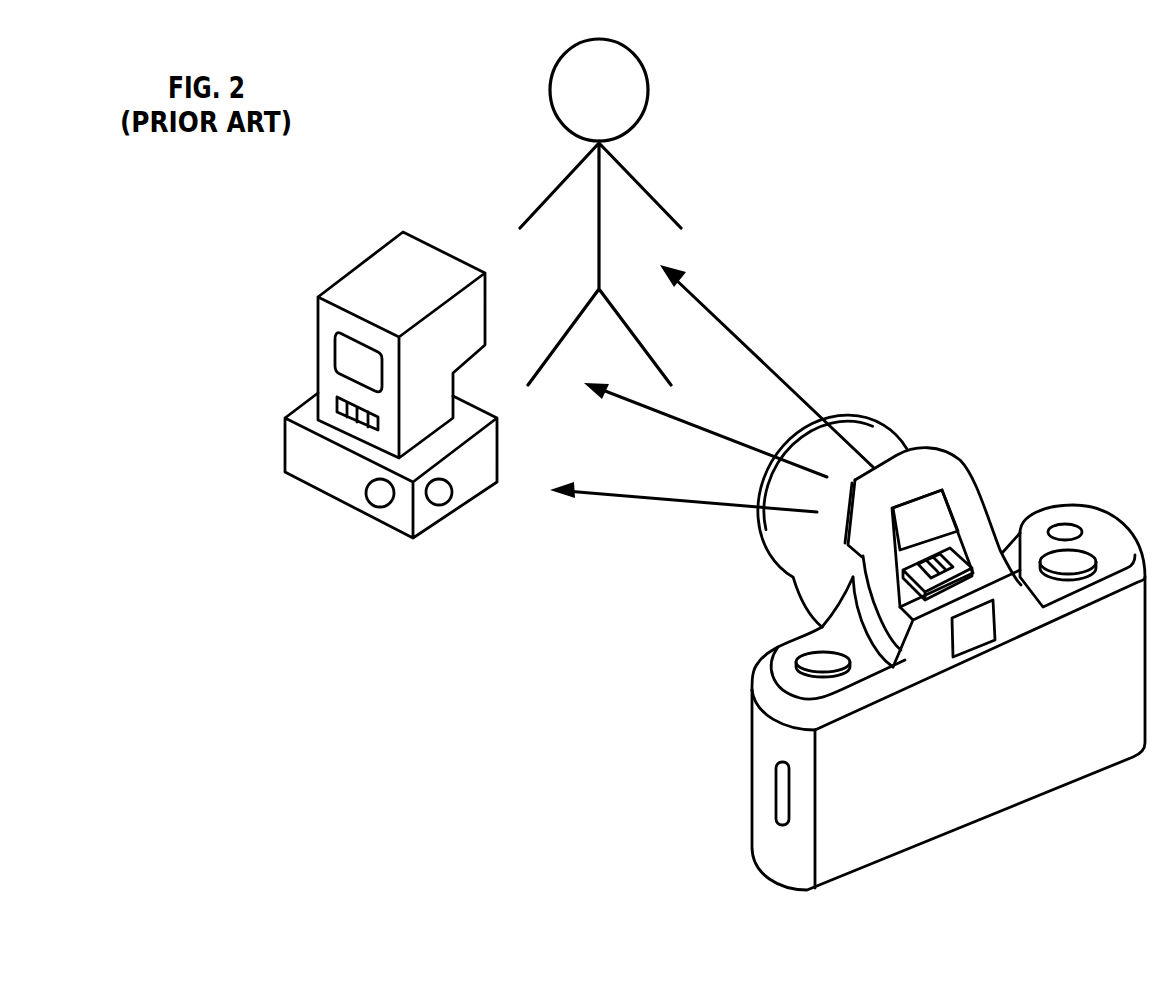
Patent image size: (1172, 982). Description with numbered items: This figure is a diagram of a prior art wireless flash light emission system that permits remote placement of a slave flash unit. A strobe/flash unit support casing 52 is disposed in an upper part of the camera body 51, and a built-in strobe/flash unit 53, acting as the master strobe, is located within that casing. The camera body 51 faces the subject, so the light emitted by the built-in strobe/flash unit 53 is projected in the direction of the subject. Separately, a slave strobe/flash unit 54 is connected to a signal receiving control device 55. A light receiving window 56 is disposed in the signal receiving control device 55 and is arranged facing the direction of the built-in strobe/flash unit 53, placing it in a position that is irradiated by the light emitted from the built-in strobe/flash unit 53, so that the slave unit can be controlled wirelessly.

The camera body 51 is at (1040, 773).
The strobe/flash unit support casing 52 is at (930, 475).
The built-in strobe/flash unit 53 is at (933, 512).
The slave strobe/flash unit 54 is at (382, 280).
The signal receiving control device 55 is at (312, 465).
The light receiving window 56 is at (383, 503).